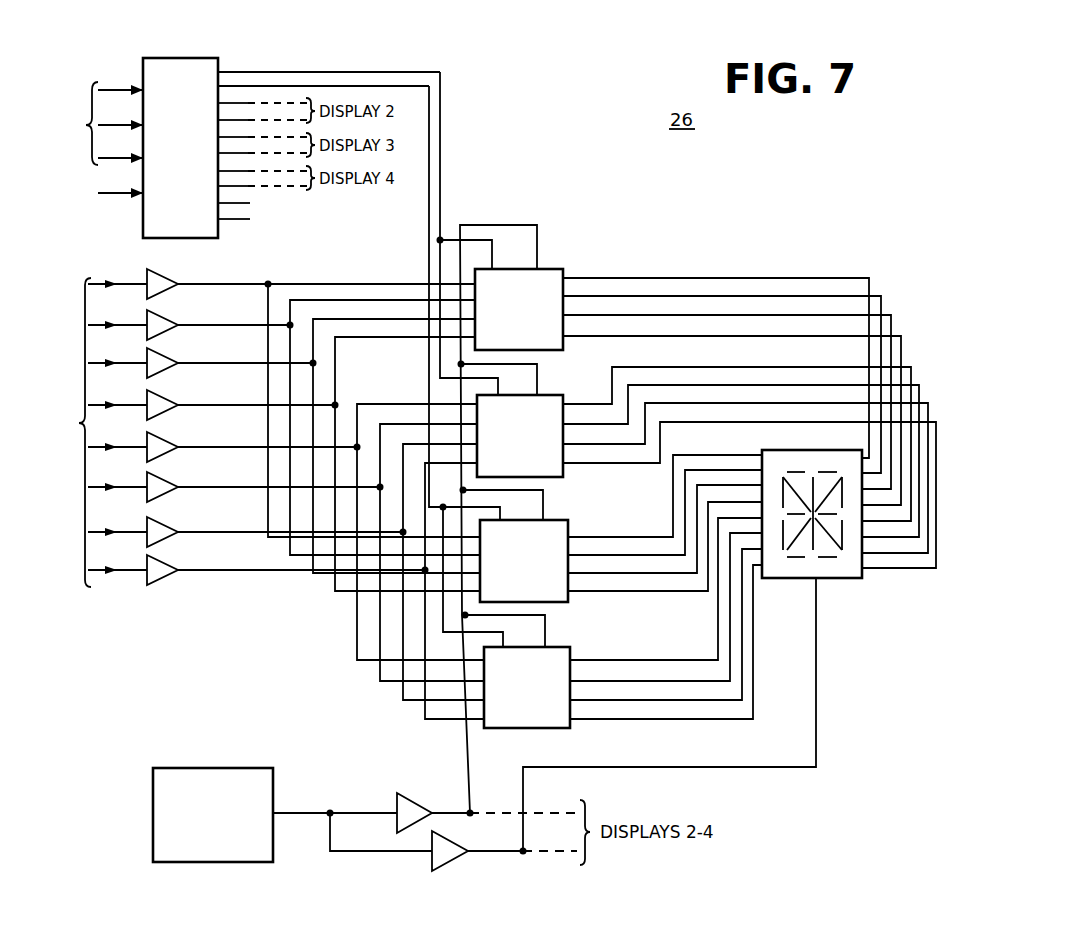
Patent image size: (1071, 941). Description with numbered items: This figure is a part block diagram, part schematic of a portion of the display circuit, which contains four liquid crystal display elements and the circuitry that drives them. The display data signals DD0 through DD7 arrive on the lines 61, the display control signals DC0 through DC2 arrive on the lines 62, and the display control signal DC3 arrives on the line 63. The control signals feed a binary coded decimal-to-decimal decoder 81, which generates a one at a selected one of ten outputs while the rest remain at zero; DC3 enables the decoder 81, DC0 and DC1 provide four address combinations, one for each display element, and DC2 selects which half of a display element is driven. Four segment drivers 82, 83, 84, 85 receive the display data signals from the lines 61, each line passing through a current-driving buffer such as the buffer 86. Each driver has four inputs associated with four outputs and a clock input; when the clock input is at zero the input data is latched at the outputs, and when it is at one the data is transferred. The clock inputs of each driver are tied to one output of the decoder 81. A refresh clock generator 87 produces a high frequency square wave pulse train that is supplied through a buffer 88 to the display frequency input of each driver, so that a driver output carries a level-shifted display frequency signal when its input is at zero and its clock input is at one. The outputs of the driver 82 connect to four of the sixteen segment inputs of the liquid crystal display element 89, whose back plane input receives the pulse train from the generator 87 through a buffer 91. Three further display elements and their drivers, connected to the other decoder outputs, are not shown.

The lines 61 is at (84, 431).
The lines 62 is at (77, 124).
The line 63 is at (117, 198).
The binary coded decimal-to-decimal decoder 81 is at (190, 58).
The driver 82 is at (547, 269).
The driver 83 is at (550, 395).
The driver 84 is at (552, 520).
The driver 85 is at (555, 647).
The buffer 86 is at (160, 270).
The refresh clock generator 87 is at (175, 775).
The buffer 88 is at (410, 797).
The liquid crystal display element 89 is at (782, 578).
The buffer 91 is at (455, 857).